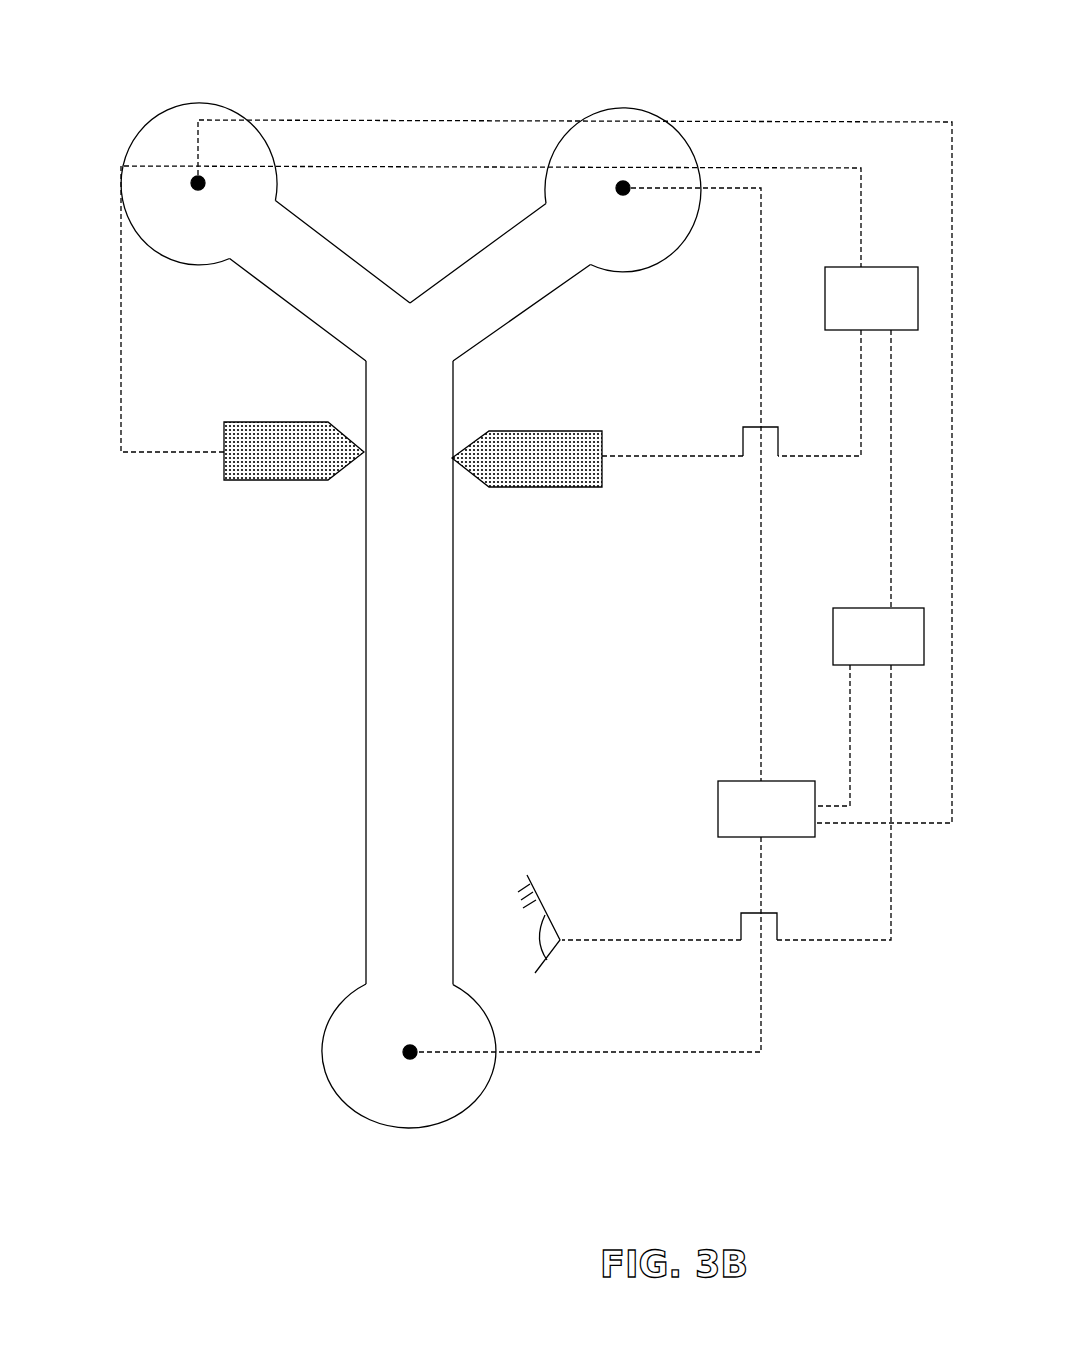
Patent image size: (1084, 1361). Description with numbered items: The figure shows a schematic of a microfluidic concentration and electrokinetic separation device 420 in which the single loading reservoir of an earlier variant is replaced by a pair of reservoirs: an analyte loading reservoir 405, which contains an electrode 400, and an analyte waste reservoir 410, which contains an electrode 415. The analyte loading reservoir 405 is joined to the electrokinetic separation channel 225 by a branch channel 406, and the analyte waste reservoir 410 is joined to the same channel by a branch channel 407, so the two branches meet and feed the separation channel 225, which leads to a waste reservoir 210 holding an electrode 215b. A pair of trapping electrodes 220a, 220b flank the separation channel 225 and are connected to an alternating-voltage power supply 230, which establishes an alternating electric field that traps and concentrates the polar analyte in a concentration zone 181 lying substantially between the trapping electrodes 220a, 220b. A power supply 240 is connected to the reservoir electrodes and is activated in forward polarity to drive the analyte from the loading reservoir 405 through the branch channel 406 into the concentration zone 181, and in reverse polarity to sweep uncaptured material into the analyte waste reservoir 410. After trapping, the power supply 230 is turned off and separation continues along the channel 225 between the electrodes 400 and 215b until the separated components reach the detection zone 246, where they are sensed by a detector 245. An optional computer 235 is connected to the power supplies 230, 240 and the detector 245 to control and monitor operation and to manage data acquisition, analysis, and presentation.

The analyte waste reservoir 410 is at (183, 103).
The analyte loading reservoir 405 is at (625, 108).
The electrode 415 is at (192, 188).
The electrode 400 is at (625, 172).
The branch channel 407 is at (308, 223).
The branch channel 406 is at (510, 225).
The trapping electrode 220a is at (288, 485).
The trapping electrode 220b is at (582, 491).
The concentration zone 181 is at (402, 673).
The electrokinetic separation channel 225 is at (457, 707).
The detection zone 246 is at (388, 913).
The detector 245 is at (558, 913).
The waste reservoir 210 is at (322, 1088).
The electrode 215b is at (402, 1064).
The alternating-voltage power supply 230 is at (848, 313).
The computer 235 is at (855, 651).
The power supply 240 is at (743, 823).
The microfluidic device 420 is at (196, 809).